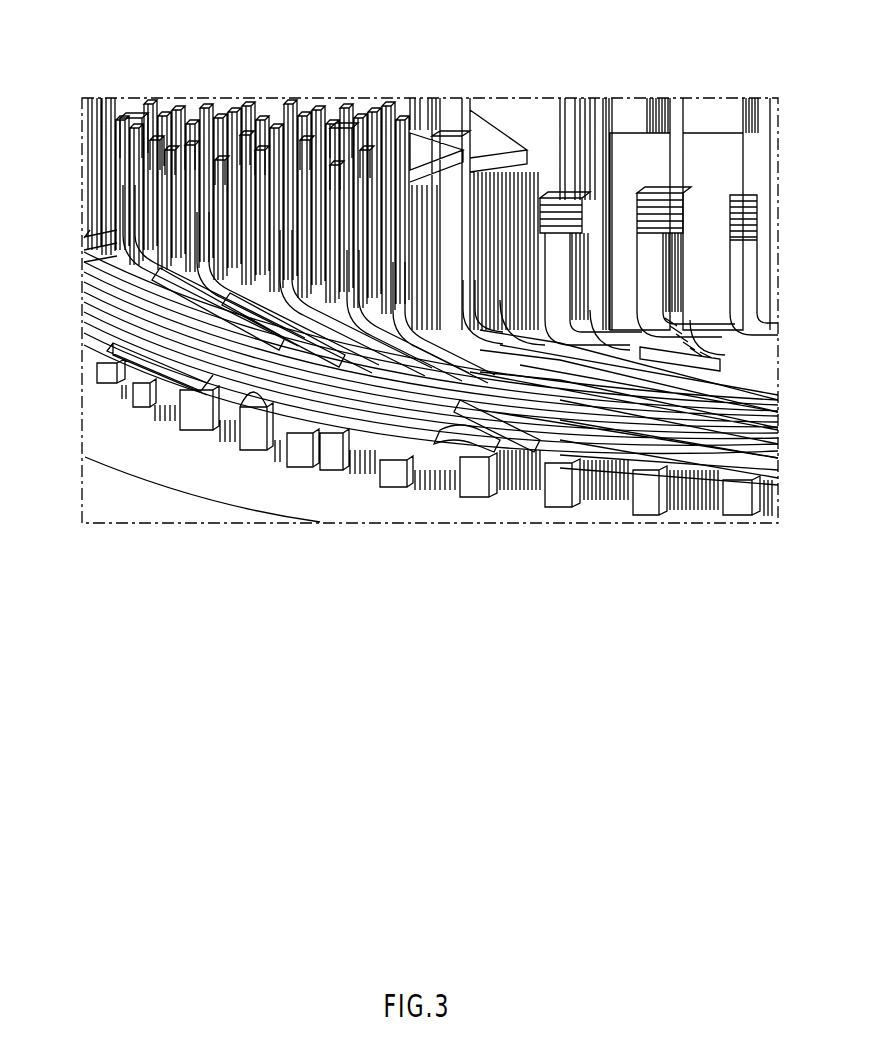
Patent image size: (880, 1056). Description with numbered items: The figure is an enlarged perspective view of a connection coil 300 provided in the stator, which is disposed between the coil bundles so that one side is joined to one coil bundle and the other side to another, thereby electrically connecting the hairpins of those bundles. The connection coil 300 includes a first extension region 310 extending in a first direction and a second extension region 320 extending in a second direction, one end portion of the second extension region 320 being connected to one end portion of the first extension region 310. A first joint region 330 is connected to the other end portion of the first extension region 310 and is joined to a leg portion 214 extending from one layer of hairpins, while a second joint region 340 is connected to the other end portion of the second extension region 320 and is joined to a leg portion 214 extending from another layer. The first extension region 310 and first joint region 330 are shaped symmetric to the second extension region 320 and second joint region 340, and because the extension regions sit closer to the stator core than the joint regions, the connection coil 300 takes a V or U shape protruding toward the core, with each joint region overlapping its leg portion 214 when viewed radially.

The leg portion 214 is at (198, 112).
The connection coil 300 is at (103, 596).
The first extension region 310 is at (227, 423).
The second extension region 320 is at (487, 400).
The first joint region 330 is at (140, 192).
The second joint region 340 is at (648, 290).